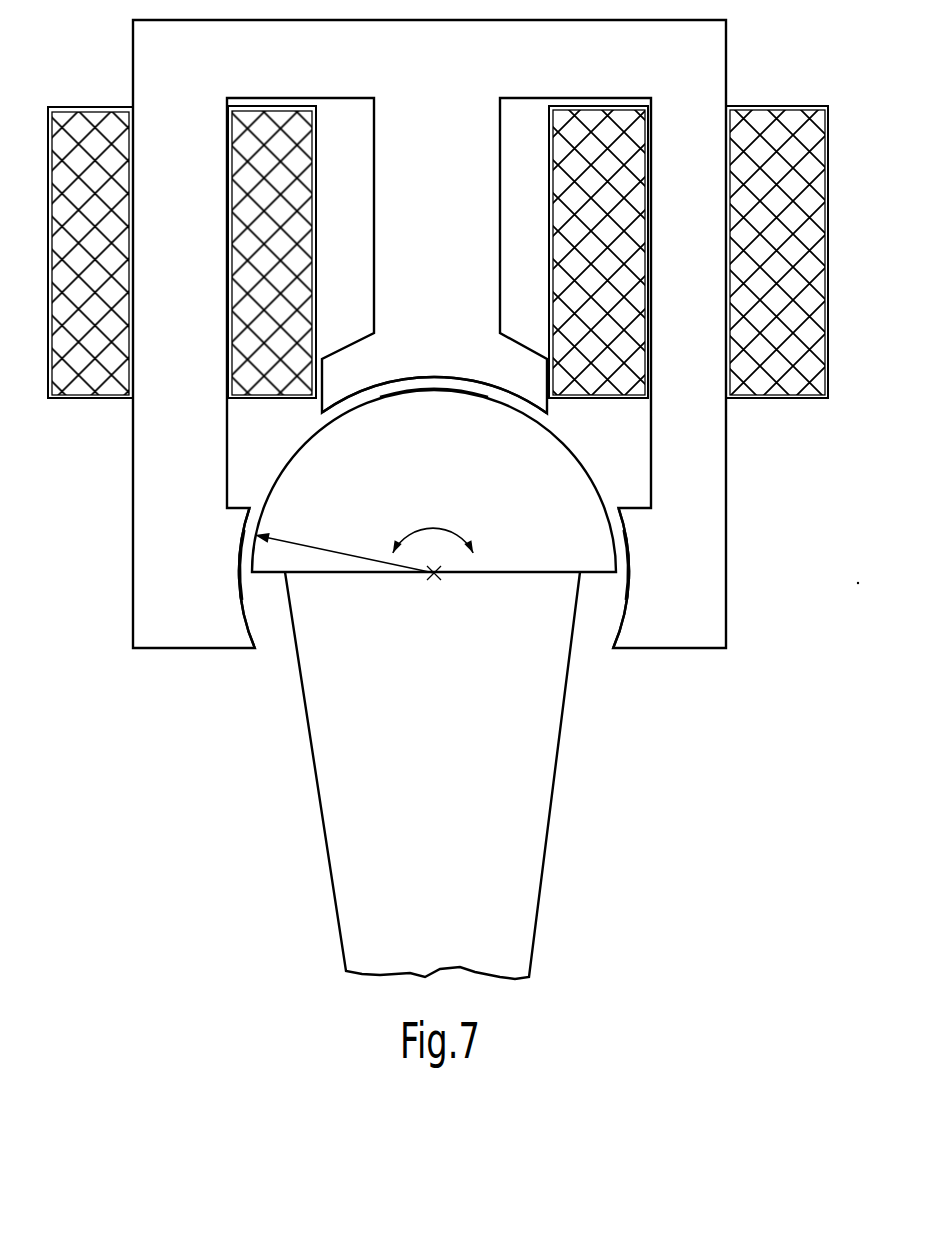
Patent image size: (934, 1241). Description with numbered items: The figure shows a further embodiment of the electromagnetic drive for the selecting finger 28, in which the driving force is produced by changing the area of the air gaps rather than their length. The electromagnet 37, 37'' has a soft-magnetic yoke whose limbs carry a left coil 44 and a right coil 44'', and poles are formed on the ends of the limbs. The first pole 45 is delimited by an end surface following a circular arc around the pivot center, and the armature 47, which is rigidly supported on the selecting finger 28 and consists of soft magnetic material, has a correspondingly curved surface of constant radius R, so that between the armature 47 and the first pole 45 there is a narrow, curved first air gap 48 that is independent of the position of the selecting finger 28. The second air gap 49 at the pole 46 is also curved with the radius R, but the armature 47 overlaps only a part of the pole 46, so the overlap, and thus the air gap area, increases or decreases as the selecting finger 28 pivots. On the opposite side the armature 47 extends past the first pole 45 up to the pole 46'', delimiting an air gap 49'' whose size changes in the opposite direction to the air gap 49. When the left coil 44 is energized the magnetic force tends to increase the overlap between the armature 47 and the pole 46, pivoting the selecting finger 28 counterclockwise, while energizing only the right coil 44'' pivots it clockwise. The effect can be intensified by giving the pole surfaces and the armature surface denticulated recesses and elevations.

The selecting finger 28 is at (507, 865).
The electromagnet 37 is at (241, 334).
The electromagnet 37'' is at (630, 334).
The magnetic coil 44 is at (328, 252).
The magnetic coil 44'' is at (800, 252).
The first pole 45 is at (452, 377).
The second pole 46 is at (203, 608).
The pole 46'' is at (684, 613).
The armature 47 is at (397, 472).
The first air gap 48 is at (421, 372).
The second air gap 49 is at (198, 565).
The air gap 49'' is at (712, 565).